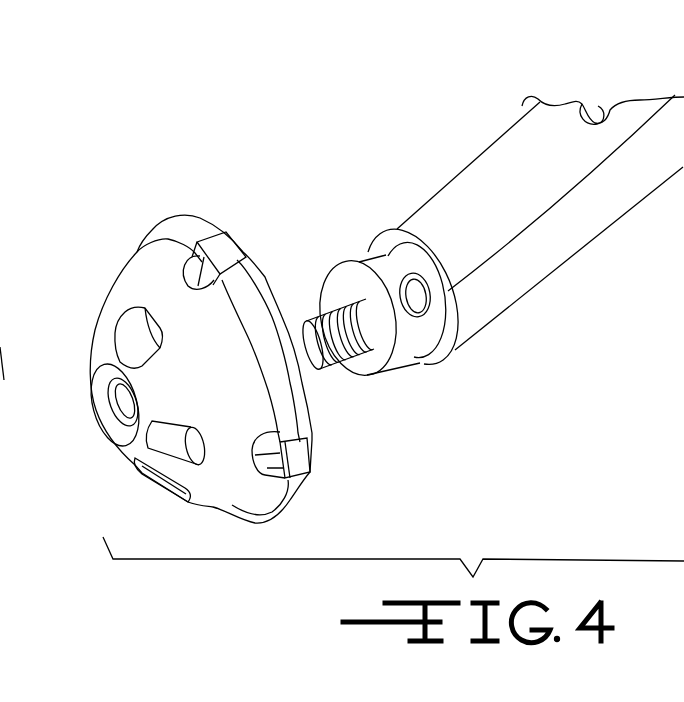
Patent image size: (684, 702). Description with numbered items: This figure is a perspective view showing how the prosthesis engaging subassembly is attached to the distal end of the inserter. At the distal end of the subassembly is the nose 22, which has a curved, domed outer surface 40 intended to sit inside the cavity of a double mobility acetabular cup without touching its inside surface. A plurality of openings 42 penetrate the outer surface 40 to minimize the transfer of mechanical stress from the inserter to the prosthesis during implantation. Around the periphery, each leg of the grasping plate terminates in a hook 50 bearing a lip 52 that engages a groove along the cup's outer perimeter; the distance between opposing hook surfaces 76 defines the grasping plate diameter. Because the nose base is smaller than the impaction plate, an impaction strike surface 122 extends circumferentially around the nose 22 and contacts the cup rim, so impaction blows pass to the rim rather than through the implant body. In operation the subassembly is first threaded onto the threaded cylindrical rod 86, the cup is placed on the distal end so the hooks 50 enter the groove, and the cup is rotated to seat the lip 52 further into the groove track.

The nose 22 is at (125, 288).
The outer surface 40 is at (188, 325).
The openings 42 is at (165, 448).
The hook 50 is at (298, 457).
The lip 52 is at (0, 353).
The hook surface 76 is at (219, 237).
The cylindrical rod 86 is at (337, 357).
The impaction strike surface 122 is at (259, 313).